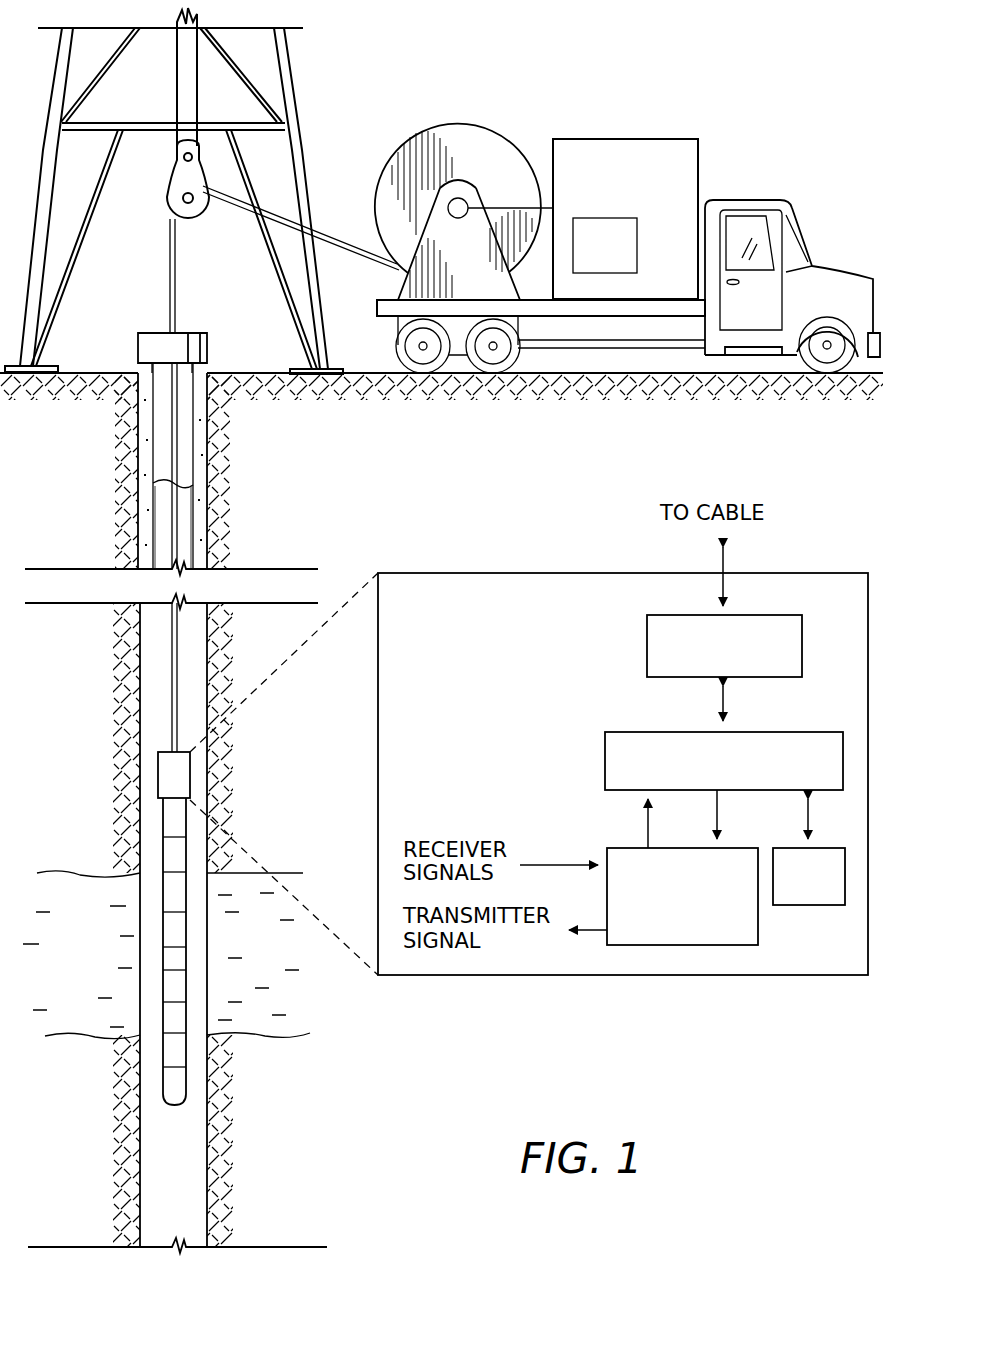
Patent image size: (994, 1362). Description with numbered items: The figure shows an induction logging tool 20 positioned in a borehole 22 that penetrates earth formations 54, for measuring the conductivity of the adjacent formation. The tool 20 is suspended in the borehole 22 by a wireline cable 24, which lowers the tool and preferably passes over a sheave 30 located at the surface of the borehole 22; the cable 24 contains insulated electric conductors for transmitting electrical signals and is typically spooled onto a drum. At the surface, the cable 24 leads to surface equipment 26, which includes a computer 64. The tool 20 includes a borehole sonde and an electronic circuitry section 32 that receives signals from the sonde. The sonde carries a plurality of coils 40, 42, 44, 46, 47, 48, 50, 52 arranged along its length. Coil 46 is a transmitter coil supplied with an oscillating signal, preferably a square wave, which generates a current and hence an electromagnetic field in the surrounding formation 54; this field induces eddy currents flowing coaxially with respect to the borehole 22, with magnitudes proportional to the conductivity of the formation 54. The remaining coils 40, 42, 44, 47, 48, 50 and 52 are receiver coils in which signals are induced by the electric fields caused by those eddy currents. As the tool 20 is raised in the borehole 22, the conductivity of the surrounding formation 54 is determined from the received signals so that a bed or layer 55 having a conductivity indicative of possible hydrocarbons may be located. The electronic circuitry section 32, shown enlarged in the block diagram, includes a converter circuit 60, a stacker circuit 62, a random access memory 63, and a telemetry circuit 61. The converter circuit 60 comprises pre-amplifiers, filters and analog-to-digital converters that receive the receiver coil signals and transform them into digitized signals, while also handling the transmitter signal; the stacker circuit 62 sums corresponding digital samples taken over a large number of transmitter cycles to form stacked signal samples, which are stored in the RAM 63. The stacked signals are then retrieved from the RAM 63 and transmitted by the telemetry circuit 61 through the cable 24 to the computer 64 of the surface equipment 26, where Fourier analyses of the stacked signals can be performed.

The induction logging tool 20 is at (122, 854).
The borehole 22 is at (147, 641).
The wireline cable 24 is at (178, 302).
The surface equipment 26 is at (640, 139).
The sheave 30 is at (406, 150).
The electronic circuitry section 32 is at (165, 772).
The receiver coil 40 is at (175, 837).
The receiver coil 42 is at (175, 872).
The receiver coil 44 is at (175, 912).
The transmitter coil 46 is at (175, 947).
The receiver coil 47 is at (175, 970).
The receiver coil 48 is at (175, 1002).
The receiver coil 50 is at (175, 1033).
The receiver coil 52 is at (175, 1067).
The earth formation 54 is at (280, 642).
The bed or layer 55 is at (280, 949).
The converter circuit 60 is at (620, 848).
The telemetry circuit 61 is at (647, 644).
The stacker circuit 62 is at (605, 756).
The random access memory (RAM) 63 is at (803, 905).
The computer 64 is at (637, 245).